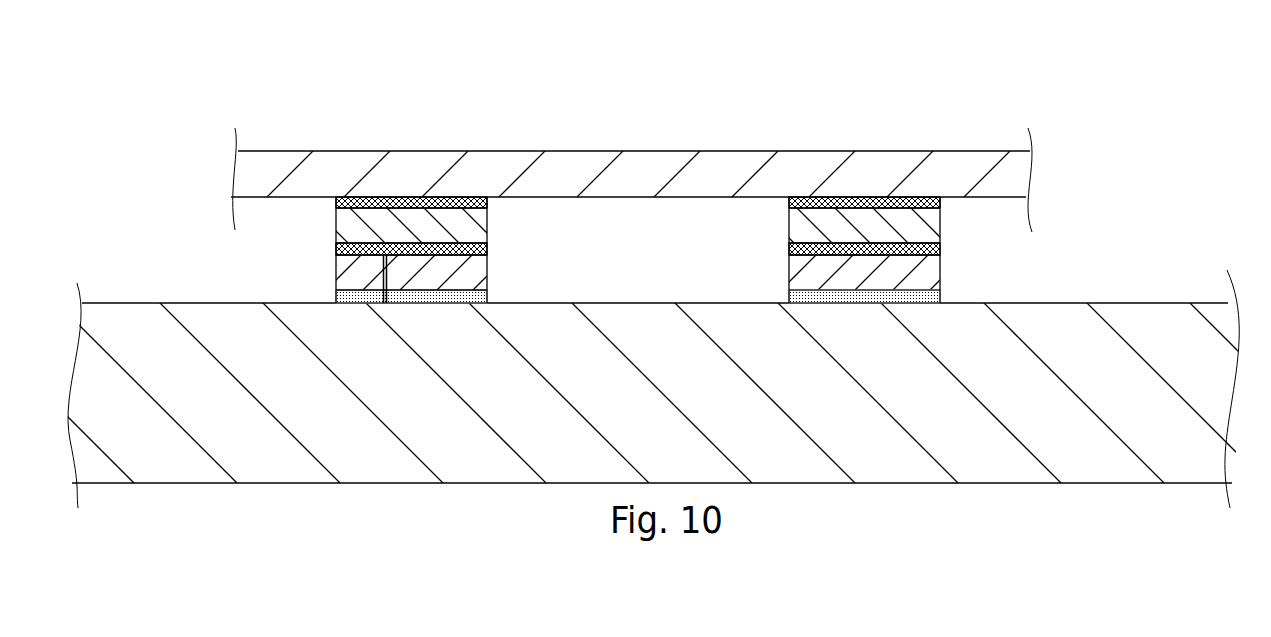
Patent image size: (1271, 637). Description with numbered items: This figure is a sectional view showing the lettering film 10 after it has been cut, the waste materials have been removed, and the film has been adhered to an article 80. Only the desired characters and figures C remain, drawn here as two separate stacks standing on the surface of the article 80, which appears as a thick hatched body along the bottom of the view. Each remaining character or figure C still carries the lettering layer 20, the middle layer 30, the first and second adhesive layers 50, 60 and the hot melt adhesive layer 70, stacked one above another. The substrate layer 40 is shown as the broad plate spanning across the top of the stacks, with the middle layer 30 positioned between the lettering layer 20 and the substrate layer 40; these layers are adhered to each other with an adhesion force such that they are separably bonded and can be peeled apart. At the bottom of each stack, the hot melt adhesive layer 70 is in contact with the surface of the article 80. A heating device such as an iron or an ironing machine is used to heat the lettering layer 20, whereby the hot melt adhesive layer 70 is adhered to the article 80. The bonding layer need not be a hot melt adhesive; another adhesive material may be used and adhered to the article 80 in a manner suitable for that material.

The lettering film 10 is at (639, 131).
The lettering layer 20 is at (885, 175).
The middle layer 30 is at (797, 223).
The substrate layer 40 is at (637, 150).
The first adhesive layer 50 is at (841, 203).
The second adhesive layer 60 is at (907, 248).
The hot melt adhesive layer 70 is at (803, 298).
The article 80 is at (1165, 347).
The characters and figures C is at (332, 248).